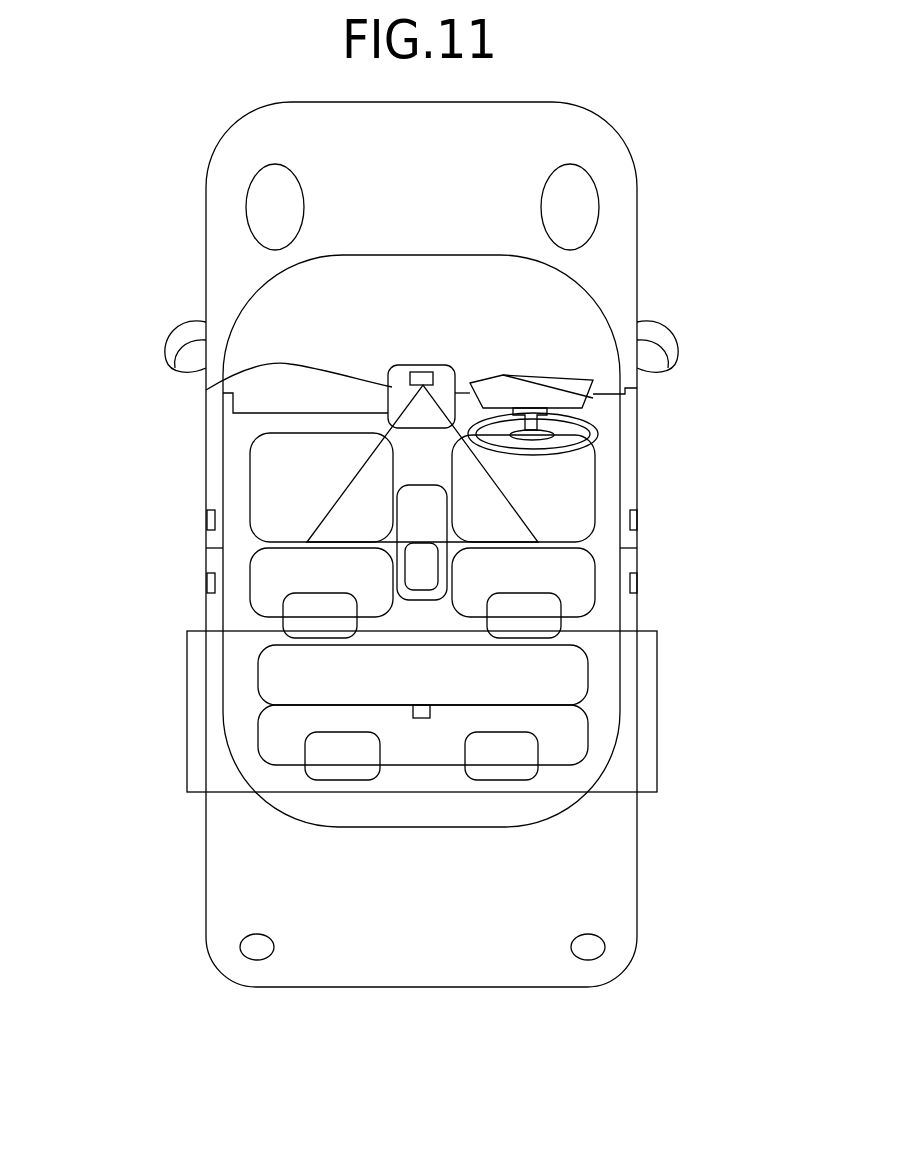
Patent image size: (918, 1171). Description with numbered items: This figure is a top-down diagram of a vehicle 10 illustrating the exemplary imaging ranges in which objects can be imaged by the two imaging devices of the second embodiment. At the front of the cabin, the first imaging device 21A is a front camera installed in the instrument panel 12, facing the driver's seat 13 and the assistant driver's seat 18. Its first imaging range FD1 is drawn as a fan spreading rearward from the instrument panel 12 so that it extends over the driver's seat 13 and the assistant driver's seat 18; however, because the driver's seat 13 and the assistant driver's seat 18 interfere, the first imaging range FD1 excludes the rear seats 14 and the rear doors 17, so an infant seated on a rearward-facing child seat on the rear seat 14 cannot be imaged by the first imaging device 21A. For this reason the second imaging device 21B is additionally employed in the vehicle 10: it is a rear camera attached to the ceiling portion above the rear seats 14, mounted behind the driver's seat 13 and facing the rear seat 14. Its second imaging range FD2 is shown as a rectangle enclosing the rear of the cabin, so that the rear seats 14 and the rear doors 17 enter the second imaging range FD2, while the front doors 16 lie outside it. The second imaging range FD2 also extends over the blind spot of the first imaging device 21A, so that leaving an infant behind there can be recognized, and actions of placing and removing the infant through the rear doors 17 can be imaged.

The vehicle 10 is at (617, 245).
The instrument panel 12 is at (206, 390).
The first imaging device 21A is at (596, 399).
The first imaging range FD1 is at (497, 478).
The front doors 16 is at (217, 458).
The rear doors 17 is at (216, 607).
The assistant driver's seat 18 is at (283, 517).
The driver's seat 13 is at (565, 510).
The second imaging range FD2 is at (657, 710).
The second imaging device 21B is at (430, 711).
The rear seats 14 is at (565, 737).